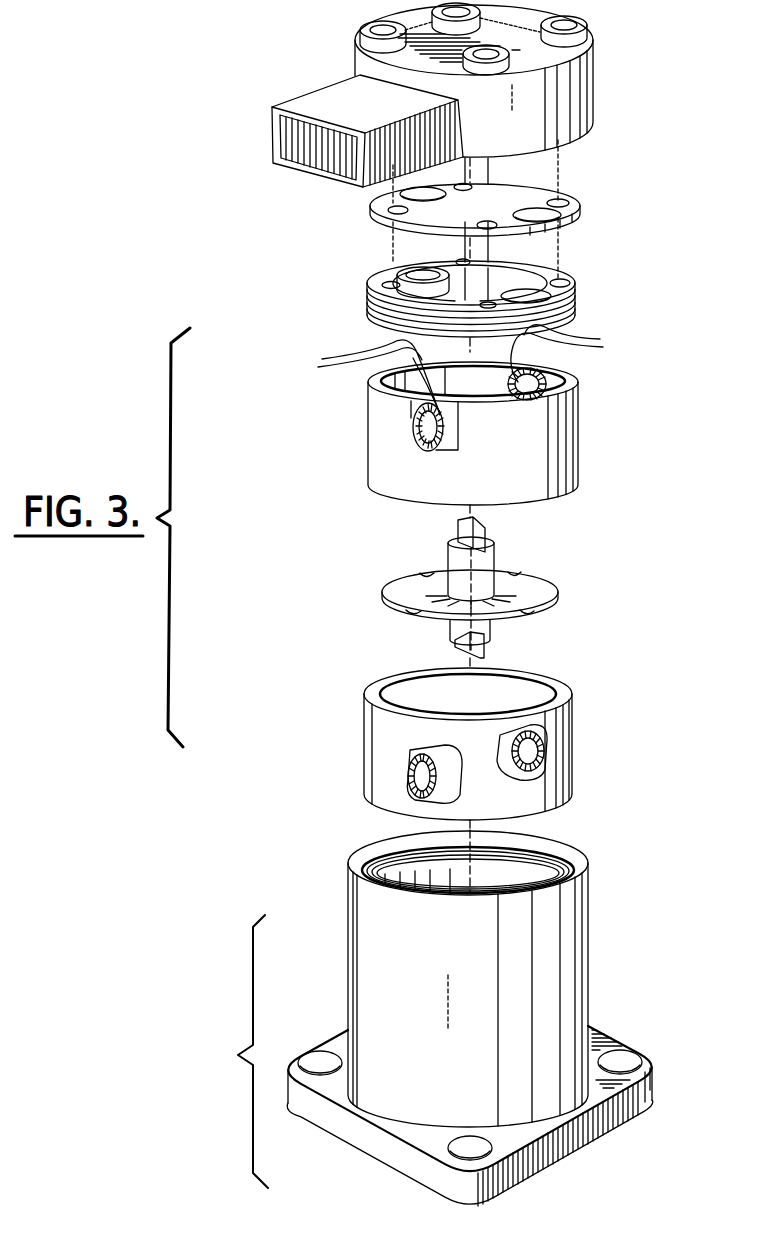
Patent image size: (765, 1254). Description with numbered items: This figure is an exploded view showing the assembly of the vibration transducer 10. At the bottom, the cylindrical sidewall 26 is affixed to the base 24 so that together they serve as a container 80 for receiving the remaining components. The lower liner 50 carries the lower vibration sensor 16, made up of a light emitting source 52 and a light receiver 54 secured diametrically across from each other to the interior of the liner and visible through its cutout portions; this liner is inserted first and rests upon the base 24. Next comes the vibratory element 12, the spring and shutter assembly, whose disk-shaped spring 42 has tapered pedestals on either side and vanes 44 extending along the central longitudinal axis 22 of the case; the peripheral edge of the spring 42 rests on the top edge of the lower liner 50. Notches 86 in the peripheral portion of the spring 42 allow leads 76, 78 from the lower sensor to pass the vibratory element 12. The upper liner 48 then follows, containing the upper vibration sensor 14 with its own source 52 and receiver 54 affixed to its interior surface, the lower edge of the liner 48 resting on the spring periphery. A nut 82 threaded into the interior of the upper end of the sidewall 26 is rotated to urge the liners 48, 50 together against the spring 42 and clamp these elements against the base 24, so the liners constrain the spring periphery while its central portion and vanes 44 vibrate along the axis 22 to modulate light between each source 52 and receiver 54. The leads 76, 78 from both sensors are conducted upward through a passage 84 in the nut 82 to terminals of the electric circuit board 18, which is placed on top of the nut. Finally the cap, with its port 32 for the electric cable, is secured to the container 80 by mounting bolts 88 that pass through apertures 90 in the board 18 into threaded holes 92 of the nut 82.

The vibration transducer 10 is at (597, 82).
The mounting bolts 88 is at (576, 33).
The port 32 is at (328, 160).
The electric circuit board 18 is at (581, 217).
The apertures 90 is at (563, 202).
The passage 84 is at (515, 280).
The threaded holes 92 is at (388, 283).
The nut 82 is at (578, 296).
The lead 76 is at (362, 377).
The lead 78 is at (573, 353).
The upper liner 48 is at (580, 438).
The light emitting source 52 is at (420, 428).
The light receiver 54 is at (545, 400).
The upper vibration sensor 14 is at (518, 390).
The central longitudinal axis 22 is at (472, 513).
The vanes 44 is at (460, 531).
The vibratory element 12 is at (492, 548).
The notches 86 is at (521, 574).
The spring 42 is at (548, 589).
The lower vibration sensor 16 is at (516, 695).
The lower liner 50 is at (573, 710).
The cylindrical sidewall 26 is at (590, 920).
The base 24 is at (613, 1040).
The container 80 is at (231, 1051).